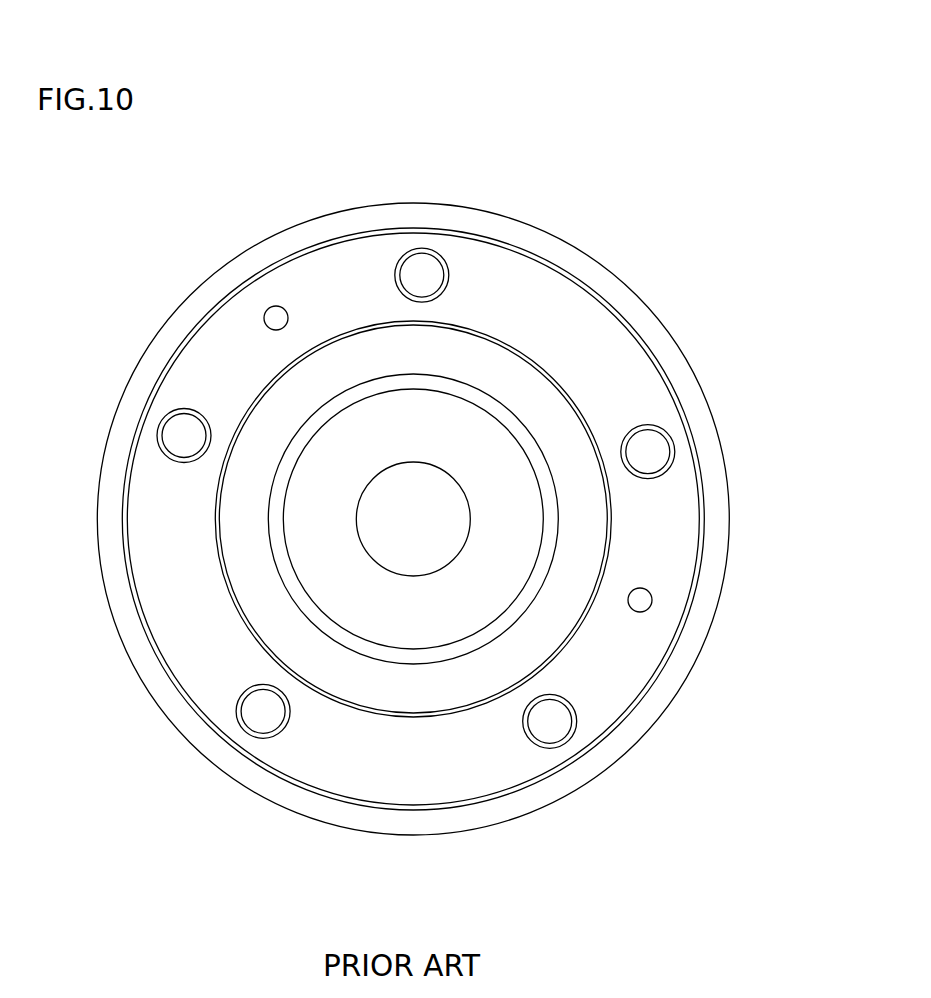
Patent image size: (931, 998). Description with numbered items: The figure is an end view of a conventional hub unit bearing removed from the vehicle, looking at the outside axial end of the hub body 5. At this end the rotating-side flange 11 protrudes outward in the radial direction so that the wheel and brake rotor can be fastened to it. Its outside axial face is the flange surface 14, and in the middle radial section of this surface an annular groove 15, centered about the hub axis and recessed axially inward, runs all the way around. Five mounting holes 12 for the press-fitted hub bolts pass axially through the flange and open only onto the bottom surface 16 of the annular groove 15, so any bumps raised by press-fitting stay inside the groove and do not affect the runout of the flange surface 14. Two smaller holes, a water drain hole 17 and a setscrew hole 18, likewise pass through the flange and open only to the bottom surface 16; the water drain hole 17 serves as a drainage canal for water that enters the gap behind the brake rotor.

The hub body 5 is at (586, 230).
The rotating-side flange 11 is at (690, 363).
The mounting holes 12 is at (447, 273).
The flange surface 14 is at (628, 303).
The annular groove 15 is at (695, 558).
The bottom surface 16 is at (503, 288).
The water drain hole 17 is at (652, 598).
The setscrew hole 18 is at (268, 310).